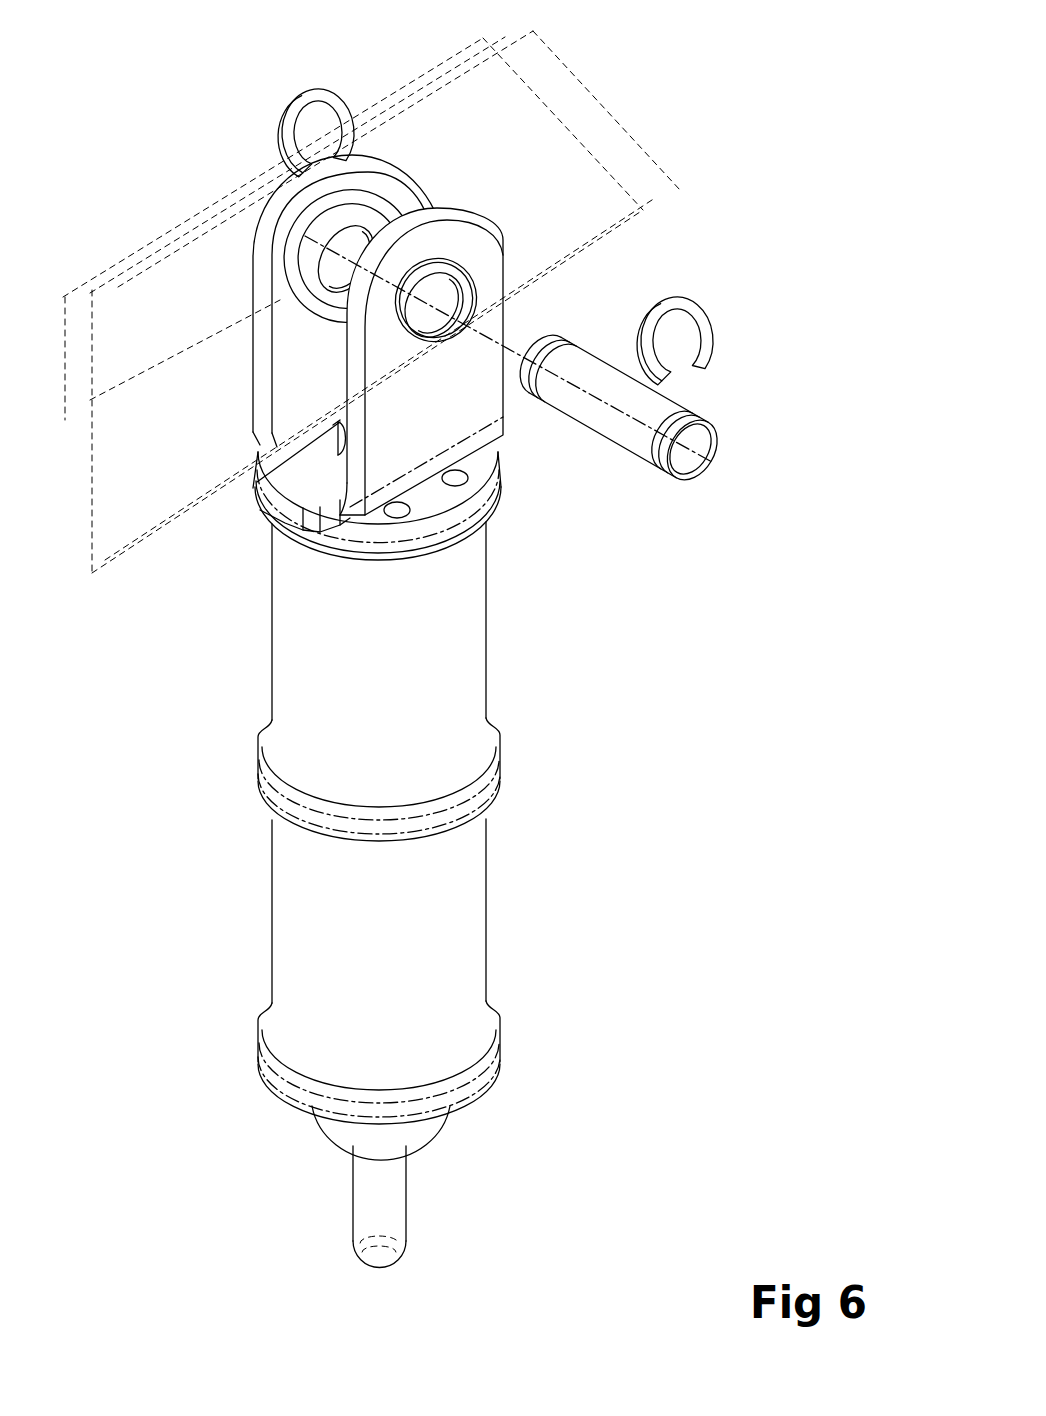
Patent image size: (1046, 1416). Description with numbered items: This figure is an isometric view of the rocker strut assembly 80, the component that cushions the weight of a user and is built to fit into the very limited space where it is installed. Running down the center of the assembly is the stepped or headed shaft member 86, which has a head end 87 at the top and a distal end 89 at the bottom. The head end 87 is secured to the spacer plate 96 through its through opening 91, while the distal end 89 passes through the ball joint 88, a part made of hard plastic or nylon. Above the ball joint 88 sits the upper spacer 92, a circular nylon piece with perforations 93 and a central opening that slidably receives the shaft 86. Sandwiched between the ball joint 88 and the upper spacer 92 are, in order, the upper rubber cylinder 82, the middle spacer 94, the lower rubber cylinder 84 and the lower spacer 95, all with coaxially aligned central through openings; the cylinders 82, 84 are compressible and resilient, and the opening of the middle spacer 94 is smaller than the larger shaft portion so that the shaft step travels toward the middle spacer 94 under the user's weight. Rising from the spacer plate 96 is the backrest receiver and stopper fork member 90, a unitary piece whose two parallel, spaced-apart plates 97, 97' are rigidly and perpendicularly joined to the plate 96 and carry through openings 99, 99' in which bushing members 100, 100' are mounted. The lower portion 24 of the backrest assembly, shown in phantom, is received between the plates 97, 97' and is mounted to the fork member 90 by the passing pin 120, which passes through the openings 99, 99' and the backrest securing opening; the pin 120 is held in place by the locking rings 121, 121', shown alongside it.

The lower portion 24 is at (177, 283).
The rocker strut assembly 80 is at (487, 623).
The upper rubber cylinder 82 is at (487, 683).
The lower rubber cylinder 84 is at (487, 917).
The headed shaft member 86 is at (406, 1200).
The head end 87 is at (338, 436).
The ball joint 88 is at (410, 1133).
The distal end 89 is at (387, 1270).
The backrest receiver and stopper fork member 90 is at (510, 355).
The through opening 91 is at (295, 472).
The upper spacer 92 is at (462, 532).
The perforations 93 is at (470, 479).
The middle spacer 94 is at (460, 810).
The lower spacer 95 is at (460, 1093).
The spacer plate 96 is at (255, 488).
The plate 97 is at (359, 314).
The plate 97' is at (241, 294).
The through opening 99 is at (550, 263).
The through opening 99' is at (418, 183).
The bushing member 100 is at (526, 195).
The bushing member 100' is at (376, 176).
The passing pin 120 is at (650, 413).
The locking ring 121 is at (733, 304).
The locking ring 121' is at (268, 94).